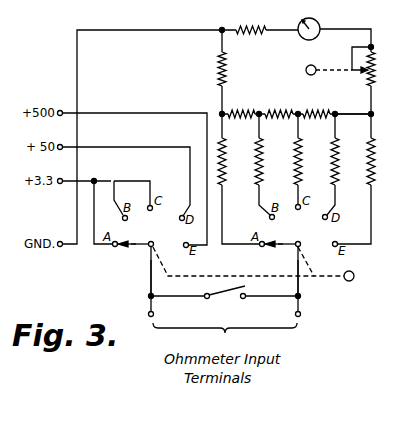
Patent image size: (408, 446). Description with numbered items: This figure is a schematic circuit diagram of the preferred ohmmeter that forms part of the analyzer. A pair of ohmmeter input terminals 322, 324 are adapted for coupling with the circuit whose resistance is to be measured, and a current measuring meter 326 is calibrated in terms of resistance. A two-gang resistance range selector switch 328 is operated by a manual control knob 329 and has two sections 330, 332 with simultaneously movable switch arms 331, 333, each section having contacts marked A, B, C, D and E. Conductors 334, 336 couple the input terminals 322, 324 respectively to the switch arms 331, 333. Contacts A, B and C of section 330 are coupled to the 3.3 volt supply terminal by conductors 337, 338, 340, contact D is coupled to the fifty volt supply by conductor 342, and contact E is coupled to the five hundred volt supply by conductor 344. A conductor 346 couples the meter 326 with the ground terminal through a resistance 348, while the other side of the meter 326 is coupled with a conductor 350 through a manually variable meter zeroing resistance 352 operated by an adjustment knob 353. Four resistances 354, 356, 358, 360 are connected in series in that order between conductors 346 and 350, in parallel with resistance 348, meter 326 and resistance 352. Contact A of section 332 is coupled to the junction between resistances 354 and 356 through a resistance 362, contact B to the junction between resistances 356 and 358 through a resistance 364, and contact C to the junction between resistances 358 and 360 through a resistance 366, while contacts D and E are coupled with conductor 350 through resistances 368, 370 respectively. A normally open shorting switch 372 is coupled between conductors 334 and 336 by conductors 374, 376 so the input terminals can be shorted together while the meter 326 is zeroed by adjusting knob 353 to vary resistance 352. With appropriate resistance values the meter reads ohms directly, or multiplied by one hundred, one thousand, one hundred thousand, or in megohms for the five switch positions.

The ohmmeter input terminal 322 is at (149, 312).
The ohmmeter input terminal 324 is at (302, 314).
The current measuring meter 326 is at (320, 23).
The two-gang resistance range selector switch 328 is at (205, 277).
The manual control knob 329 is at (353, 280).
The switch section 330 is at (146, 234).
The switch arm 331 is at (137, 248).
The switch section 332 is at (291, 234).
The switch arm 333 is at (274, 247).
The conductor 334 is at (150, 291).
The conductor 336 is at (300, 288).
The conductor 337 is at (103, 247).
The conductor 338 is at (115, 192).
The conductor 340 is at (137, 180).
The conductor 342 is at (141, 146).
The conductor 344 is at (144, 112).
The conductor 346 is at (78, 57).
The resistance 348 is at (245, 33).
The conductor 350 is at (343, 113).
The meter zeroing resistance 352 is at (375, 70).
The adjustment knob 353 is at (315, 66).
The resistance 354 is at (227, 60).
The resistance 356 is at (242, 109).
The resistance 358 is at (278, 110).
The resistance 360 is at (316, 109).
The resistance 362 is at (228, 145).
The resistance 364 is at (265, 145).
The resistance 366 is at (304, 150).
The resistance 368 is at (340, 145).
The resistance 370 is at (382, 143).
The shorting switch 372 is at (226, 298).
The conductor 374 is at (177, 298).
The conductor 376 is at (268, 298).